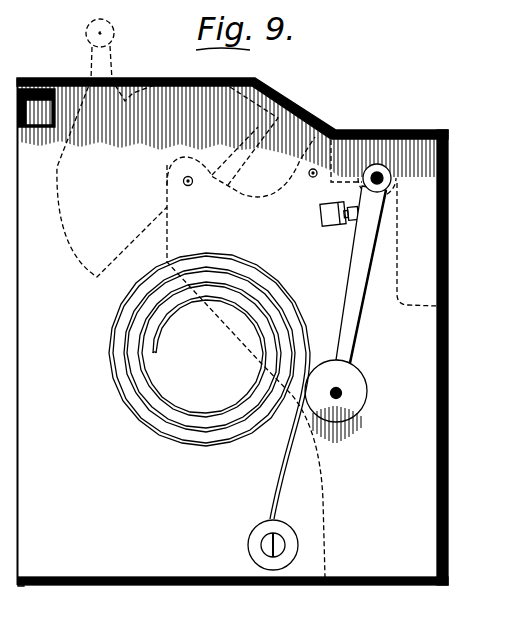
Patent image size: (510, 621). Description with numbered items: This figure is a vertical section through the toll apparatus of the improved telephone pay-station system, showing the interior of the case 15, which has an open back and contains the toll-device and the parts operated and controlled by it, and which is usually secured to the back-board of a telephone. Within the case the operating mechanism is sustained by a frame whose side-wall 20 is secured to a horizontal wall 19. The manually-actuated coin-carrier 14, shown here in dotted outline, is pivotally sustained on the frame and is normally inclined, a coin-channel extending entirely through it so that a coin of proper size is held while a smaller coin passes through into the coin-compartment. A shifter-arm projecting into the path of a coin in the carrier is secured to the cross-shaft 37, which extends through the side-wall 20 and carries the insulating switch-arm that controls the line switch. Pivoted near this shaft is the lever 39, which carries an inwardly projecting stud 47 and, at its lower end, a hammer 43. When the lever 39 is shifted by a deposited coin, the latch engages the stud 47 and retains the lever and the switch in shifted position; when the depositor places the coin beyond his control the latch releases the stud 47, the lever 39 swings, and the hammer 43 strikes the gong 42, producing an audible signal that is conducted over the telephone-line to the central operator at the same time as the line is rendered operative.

The coin-carrier 14 is at (58, 172).
The case 15 is at (413, 131).
The horizontal wall 19 is at (118, 577).
The side-wall 20 is at (258, 198).
The cross-shaft 37 is at (391, 178).
The lever 39 is at (345, 313).
The gong 42 is at (190, 447).
The hammer 43 is at (360, 381).
The stud 47 is at (342, 394).